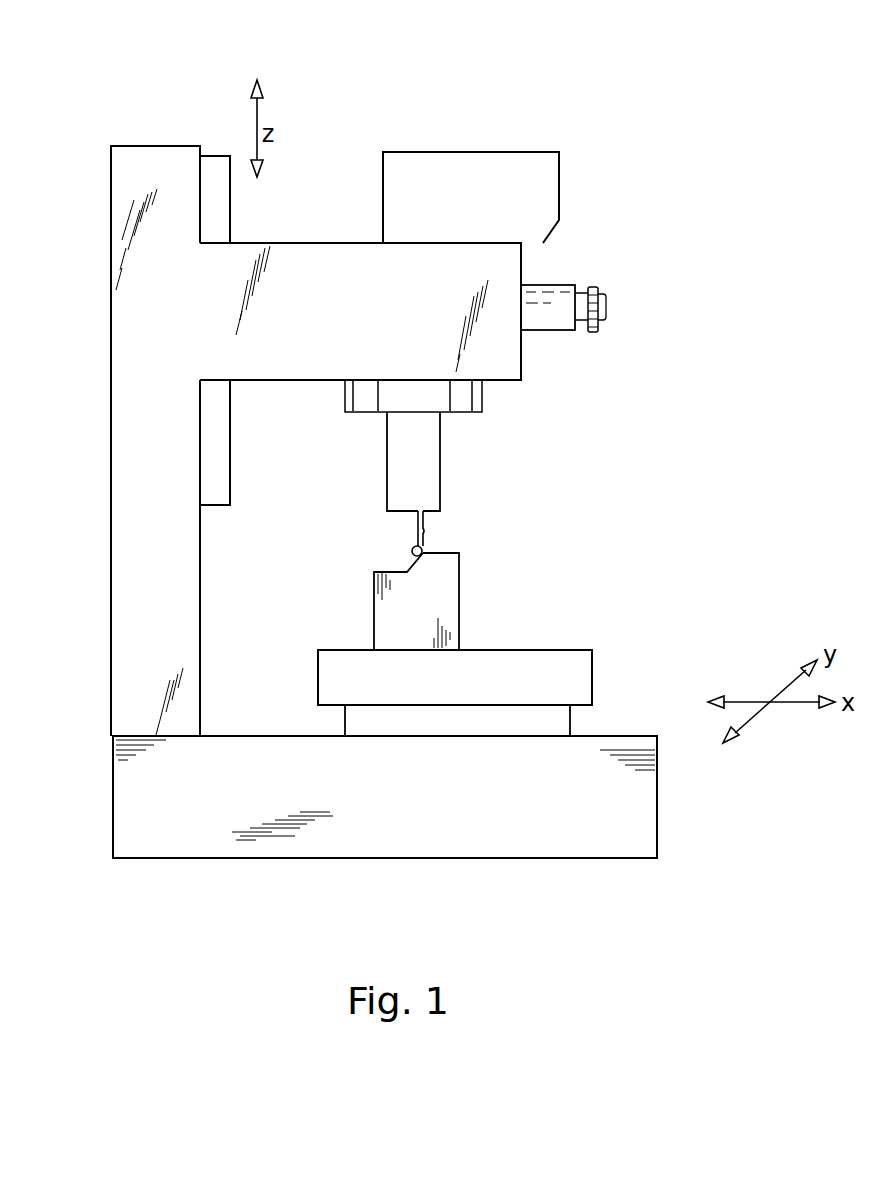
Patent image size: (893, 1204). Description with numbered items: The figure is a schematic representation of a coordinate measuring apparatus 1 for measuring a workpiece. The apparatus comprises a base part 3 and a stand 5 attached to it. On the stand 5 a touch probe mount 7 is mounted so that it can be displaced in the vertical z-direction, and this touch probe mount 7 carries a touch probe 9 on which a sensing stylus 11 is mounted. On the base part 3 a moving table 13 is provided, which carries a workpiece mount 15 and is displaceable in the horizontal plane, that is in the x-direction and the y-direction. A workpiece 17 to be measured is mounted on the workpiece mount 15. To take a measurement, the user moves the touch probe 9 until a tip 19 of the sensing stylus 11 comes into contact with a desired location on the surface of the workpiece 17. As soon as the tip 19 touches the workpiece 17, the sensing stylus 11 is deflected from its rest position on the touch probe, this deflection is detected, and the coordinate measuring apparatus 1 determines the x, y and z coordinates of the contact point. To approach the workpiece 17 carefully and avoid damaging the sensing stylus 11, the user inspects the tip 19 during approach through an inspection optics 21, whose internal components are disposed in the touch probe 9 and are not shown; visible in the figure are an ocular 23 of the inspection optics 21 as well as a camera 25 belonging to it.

The coordinate measuring apparatus 1 is at (678, 112).
The base part 3 is at (657, 811).
The stand 5 is at (110, 433).
The touch probe mount 7 is at (523, 367).
The touch probe 9 is at (442, 461).
The sensing stylus 11 is at (425, 532).
The moving table 13 is at (343, 728).
The workpiece mount 15 is at (553, 649).
The workpiece 17 is at (461, 582).
The tip of the sensing stylus 19 is at (410, 550).
The inspection optics 21 is at (562, 284).
The ocular 23 is at (600, 326).
The camera 25 is at (428, 151).